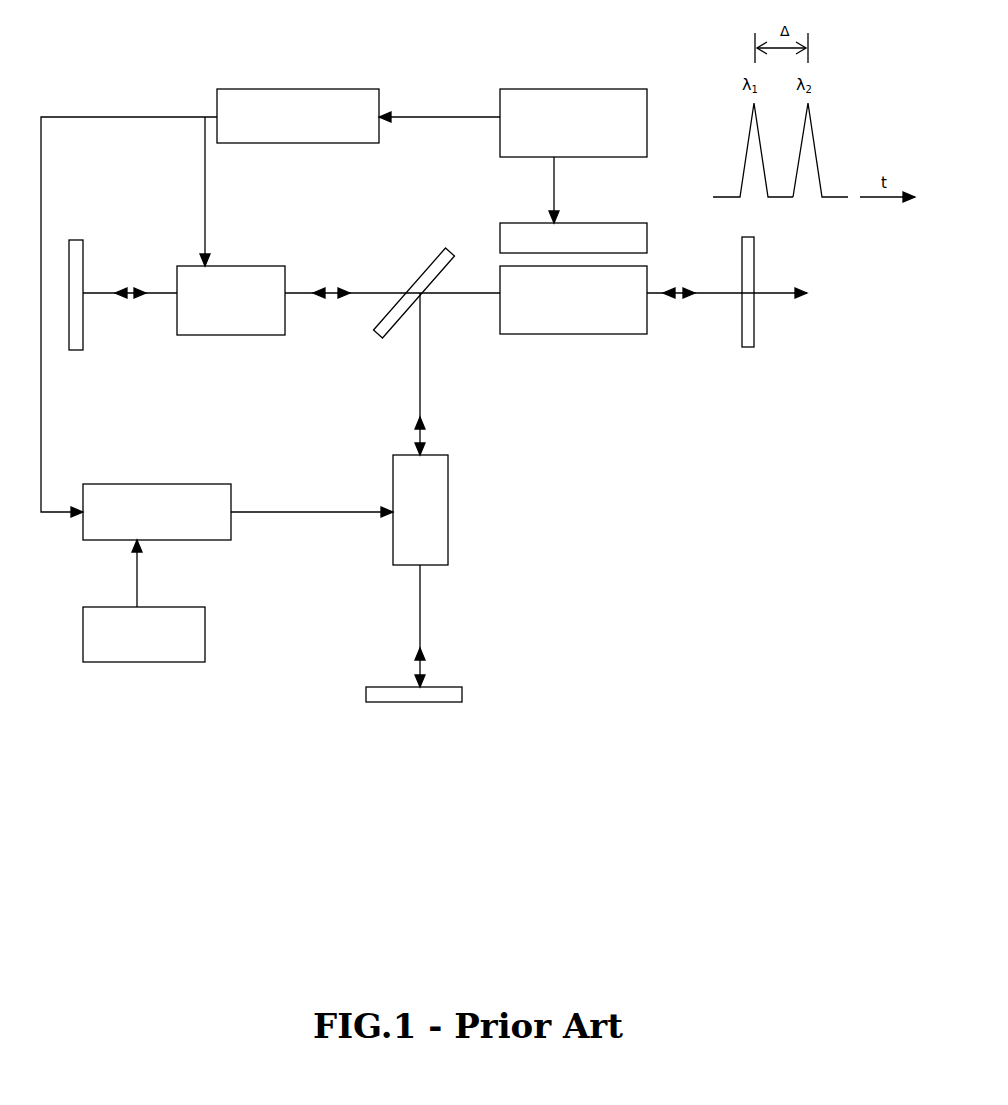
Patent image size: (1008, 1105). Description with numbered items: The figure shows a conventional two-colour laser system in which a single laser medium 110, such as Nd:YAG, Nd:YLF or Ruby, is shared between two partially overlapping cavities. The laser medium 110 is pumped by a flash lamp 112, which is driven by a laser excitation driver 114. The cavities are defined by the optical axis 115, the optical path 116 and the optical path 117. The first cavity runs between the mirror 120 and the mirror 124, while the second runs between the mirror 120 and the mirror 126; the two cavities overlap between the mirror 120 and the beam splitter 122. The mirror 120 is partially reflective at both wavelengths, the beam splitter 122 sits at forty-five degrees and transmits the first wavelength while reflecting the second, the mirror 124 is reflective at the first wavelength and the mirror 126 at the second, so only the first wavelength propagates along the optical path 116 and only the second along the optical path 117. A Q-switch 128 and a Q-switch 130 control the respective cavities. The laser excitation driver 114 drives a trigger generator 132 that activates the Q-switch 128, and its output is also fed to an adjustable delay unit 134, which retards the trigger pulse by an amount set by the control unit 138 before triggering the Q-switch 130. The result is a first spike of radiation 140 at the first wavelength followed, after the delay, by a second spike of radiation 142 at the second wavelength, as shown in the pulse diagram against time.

The laser medium 110 is at (573, 300).
The flash lamp 112 is at (573, 238).
The laser excitation driver 114 is at (513, 156).
The optical axis 115 is at (727, 302).
The optical path 116 is at (392, 274).
The optical path 117 is at (432, 374).
The mirror 120 is at (764, 292).
The beam splitter 122 is at (414, 293).
The mirror 124 is at (123, 315).
The mirror 126 is at (435, 699).
The Q-switch 128 is at (231, 300).
The Q-switch 130 is at (447, 571).
The trigger generator 132 is at (210, 303).
The adjustable delay unit 134 is at (238, 512).
The control unit 138 is at (144, 601).
The spike of radiation 140 is at (736, 185).
The spike of radiation 142 is at (821, 176).